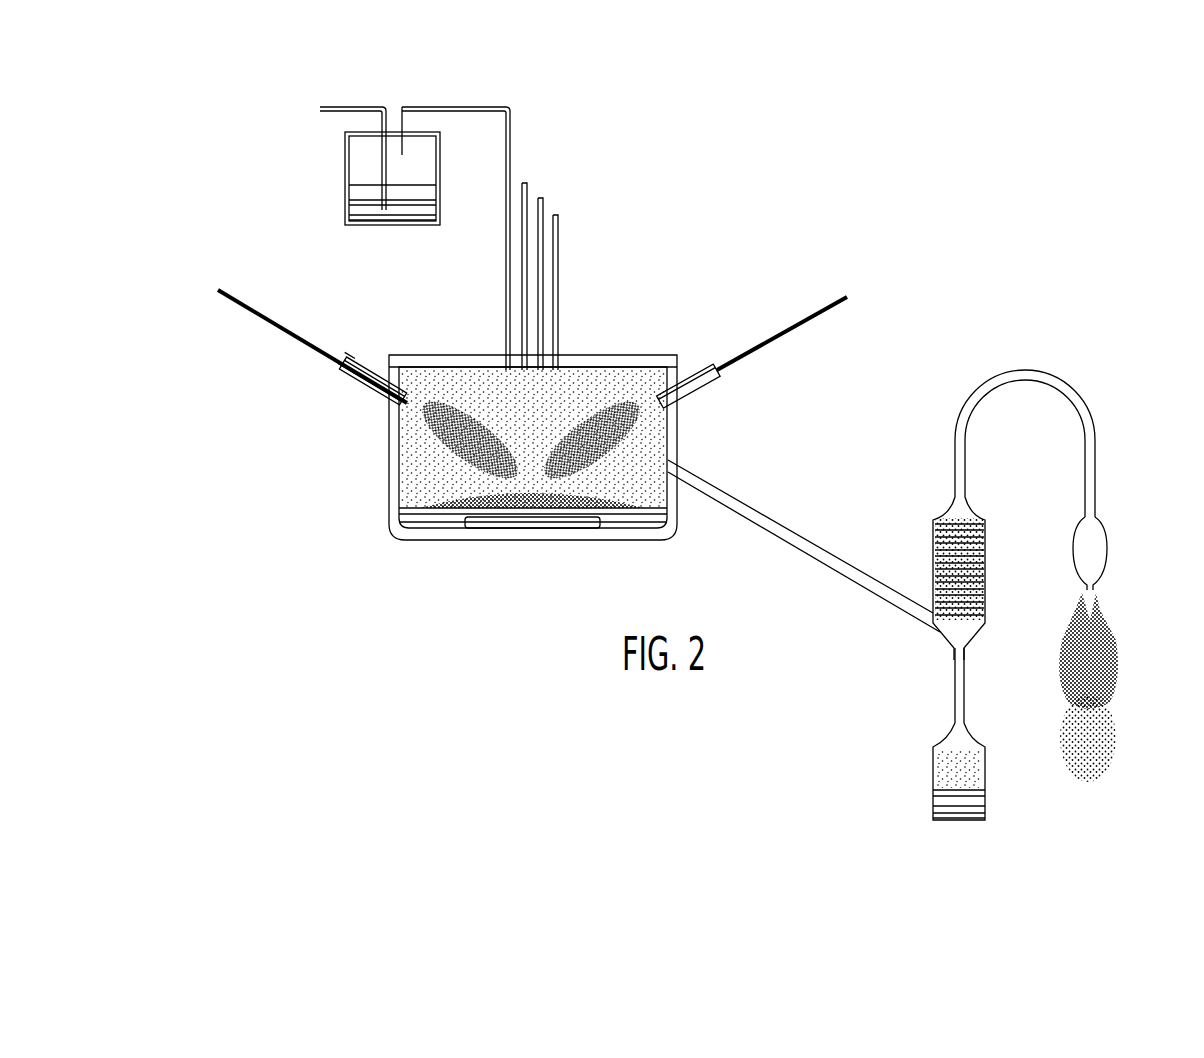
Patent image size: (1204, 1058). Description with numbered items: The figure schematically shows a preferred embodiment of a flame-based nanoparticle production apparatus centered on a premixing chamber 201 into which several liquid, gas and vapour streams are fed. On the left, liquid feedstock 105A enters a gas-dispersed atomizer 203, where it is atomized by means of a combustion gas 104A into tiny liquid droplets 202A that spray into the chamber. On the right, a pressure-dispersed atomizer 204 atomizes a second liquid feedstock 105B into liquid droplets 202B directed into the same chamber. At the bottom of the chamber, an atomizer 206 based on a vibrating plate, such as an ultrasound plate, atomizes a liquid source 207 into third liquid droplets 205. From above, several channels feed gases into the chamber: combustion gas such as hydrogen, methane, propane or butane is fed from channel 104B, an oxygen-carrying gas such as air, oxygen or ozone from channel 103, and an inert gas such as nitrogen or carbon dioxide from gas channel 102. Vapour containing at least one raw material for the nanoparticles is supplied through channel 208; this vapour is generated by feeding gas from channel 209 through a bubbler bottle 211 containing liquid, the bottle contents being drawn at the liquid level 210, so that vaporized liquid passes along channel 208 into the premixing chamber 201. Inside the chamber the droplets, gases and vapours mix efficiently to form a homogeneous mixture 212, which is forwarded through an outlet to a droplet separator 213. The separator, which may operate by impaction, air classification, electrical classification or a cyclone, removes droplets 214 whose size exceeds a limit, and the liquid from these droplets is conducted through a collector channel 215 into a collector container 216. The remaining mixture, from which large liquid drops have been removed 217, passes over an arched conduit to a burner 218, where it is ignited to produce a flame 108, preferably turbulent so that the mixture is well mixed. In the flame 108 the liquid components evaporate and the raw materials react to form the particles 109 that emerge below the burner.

The gas channel 102 is at (558, 215).
The channel 103 is at (543, 198).
The combustion gas 104A is at (345, 355).
The channel 104B is at (527, 183).
The liquid feedstock 105A is at (218, 290).
The liquid feedstock 105B is at (847, 297).
The flame 108 is at (1112, 642).
The particles 109 is at (1110, 745).
The premixing chamber 201 is at (440, 357).
The liquid droplets 202A is at (487, 380).
The liquid droplets 202B is at (640, 376).
The gas-dispersed atomizer 203 is at (353, 385).
The pressure-dispersed atomizer 204 is at (708, 387).
The third liquid droplets 205 is at (456, 493).
The atomizer 206 is at (515, 522).
The liquid source 207 is at (420, 527).
The channel 208 is at (458, 107).
The channel 209 is at (320, 107).
The liquid 210 is at (347, 203).
The bubbler bottle 211 is at (345, 170).
The homogeneous mixture 212 is at (805, 540).
The droplet separator 213 is at (945, 512).
The droplets 214 is at (985, 590).
The collector channel 215 is at (953, 713).
The collector container 216 is at (933, 768).
The mixture from which large liquid drops are removed 217 is at (1075, 392).
The burner 218 is at (1100, 535).